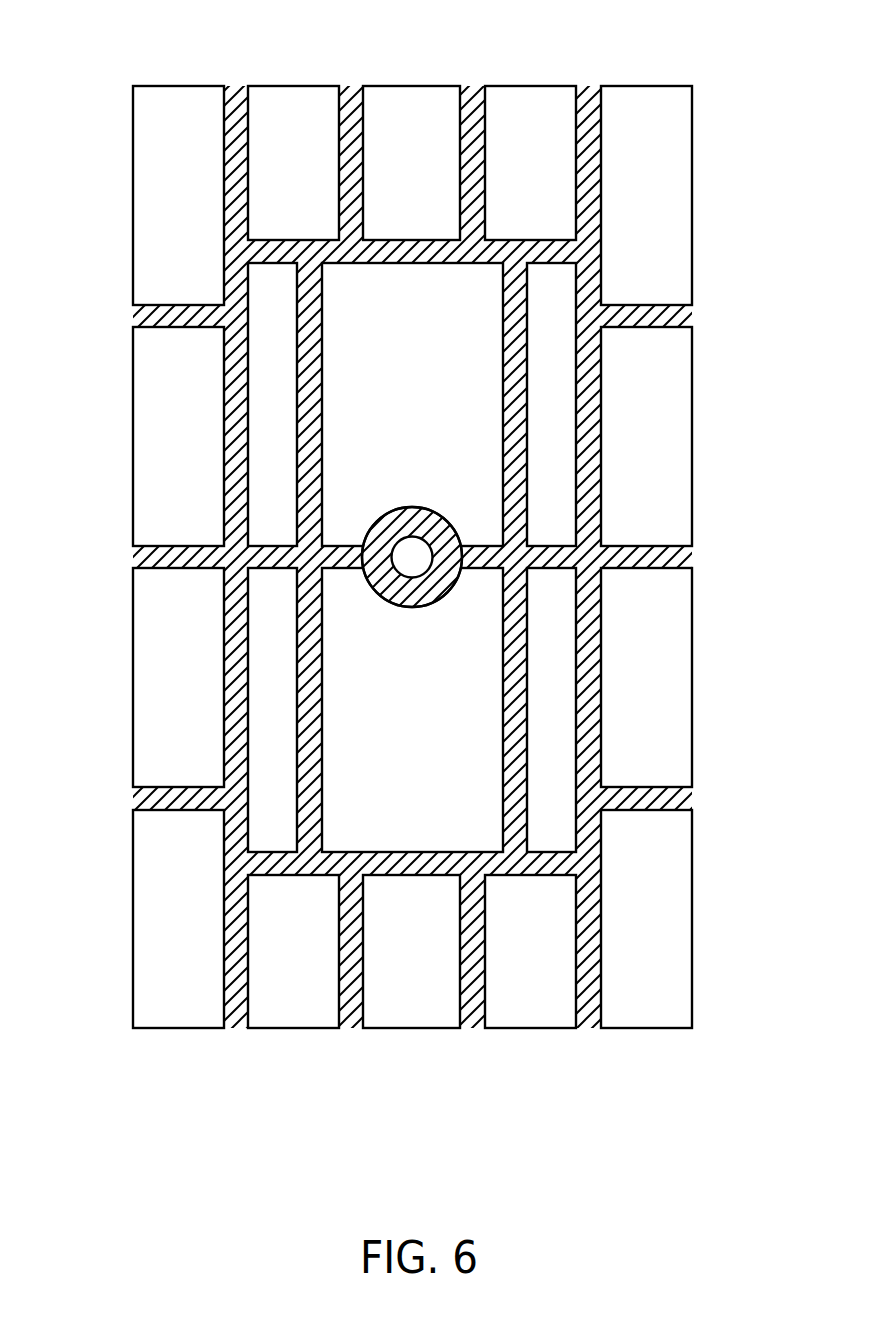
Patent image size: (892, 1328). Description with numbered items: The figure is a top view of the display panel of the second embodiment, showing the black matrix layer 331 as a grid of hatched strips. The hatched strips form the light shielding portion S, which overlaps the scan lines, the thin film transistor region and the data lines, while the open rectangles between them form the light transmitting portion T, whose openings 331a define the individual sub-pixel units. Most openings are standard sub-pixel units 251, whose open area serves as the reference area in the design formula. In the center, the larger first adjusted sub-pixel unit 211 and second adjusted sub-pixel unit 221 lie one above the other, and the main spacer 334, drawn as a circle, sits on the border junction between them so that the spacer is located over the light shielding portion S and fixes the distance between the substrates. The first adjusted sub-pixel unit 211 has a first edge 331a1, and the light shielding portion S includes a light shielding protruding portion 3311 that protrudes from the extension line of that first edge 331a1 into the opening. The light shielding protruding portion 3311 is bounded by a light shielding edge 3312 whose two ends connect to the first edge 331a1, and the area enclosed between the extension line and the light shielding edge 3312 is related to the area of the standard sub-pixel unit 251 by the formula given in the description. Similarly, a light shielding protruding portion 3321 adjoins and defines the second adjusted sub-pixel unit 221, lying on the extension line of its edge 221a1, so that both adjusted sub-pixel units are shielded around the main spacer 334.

The light transmitting portion T is at (522, 95).
The light shielding portion S is at (585, 92).
The first adjusted sub-pixel unit 211 is at (348, 445).
The second adjusted sub-pixel unit 221 is at (357, 690).
The edge of the second adjusted sub-pixel unit 221a1 is at (366, 573).
The standard sub-pixel unit 251 is at (168, 378).
The black matrix layer 331 is at (688, 312).
The openings 331a is at (677, 338).
The first edge 331a1 is at (482, 547).
The main spacer 334 is at (412, 557).
The light shielding protruding portion 3311 is at (408, 530).
The light shielding edge 3312 is at (413, 507).
The light shielding protruding portion 3321 is at (385, 597).